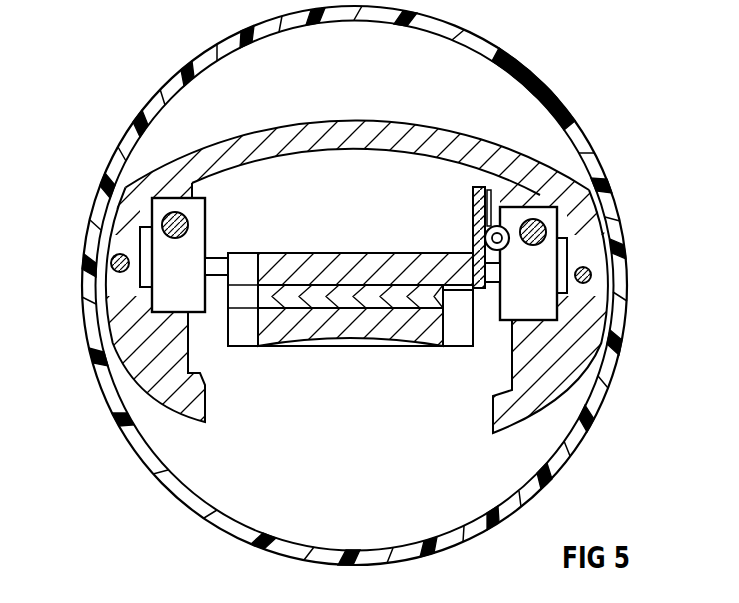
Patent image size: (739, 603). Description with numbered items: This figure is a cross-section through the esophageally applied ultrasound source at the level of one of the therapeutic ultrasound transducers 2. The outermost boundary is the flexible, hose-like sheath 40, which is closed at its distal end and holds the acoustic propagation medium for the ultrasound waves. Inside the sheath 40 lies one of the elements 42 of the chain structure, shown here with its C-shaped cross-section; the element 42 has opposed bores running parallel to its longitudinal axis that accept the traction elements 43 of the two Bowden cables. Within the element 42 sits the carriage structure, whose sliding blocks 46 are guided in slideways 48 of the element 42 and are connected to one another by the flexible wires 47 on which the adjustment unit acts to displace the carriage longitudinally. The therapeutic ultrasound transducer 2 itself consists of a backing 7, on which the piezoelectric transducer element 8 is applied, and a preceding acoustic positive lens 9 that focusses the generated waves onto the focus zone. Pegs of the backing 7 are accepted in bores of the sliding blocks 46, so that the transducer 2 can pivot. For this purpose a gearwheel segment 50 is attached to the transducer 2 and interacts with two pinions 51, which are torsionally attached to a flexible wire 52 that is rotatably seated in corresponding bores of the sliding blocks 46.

The therapeutic ultrasound transducer 2 is at (352, 317).
The backing 7 is at (317, 260).
The piezoelectric transducer element 8 is at (378, 296).
The acoustic positive lens 9 is at (388, 328).
The sheath 40 is at (547, 88).
The element 42 is at (346, 133).
The traction element 43 is at (111, 260).
The sliding block 46 is at (158, 243).
The flexible wire 47 is at (166, 218).
The slideway 48 is at (143, 296).
The gearwheel segment 50 is at (471, 199).
The pinion 51 is at (503, 227).
The flexible wire 52 is at (492, 226).